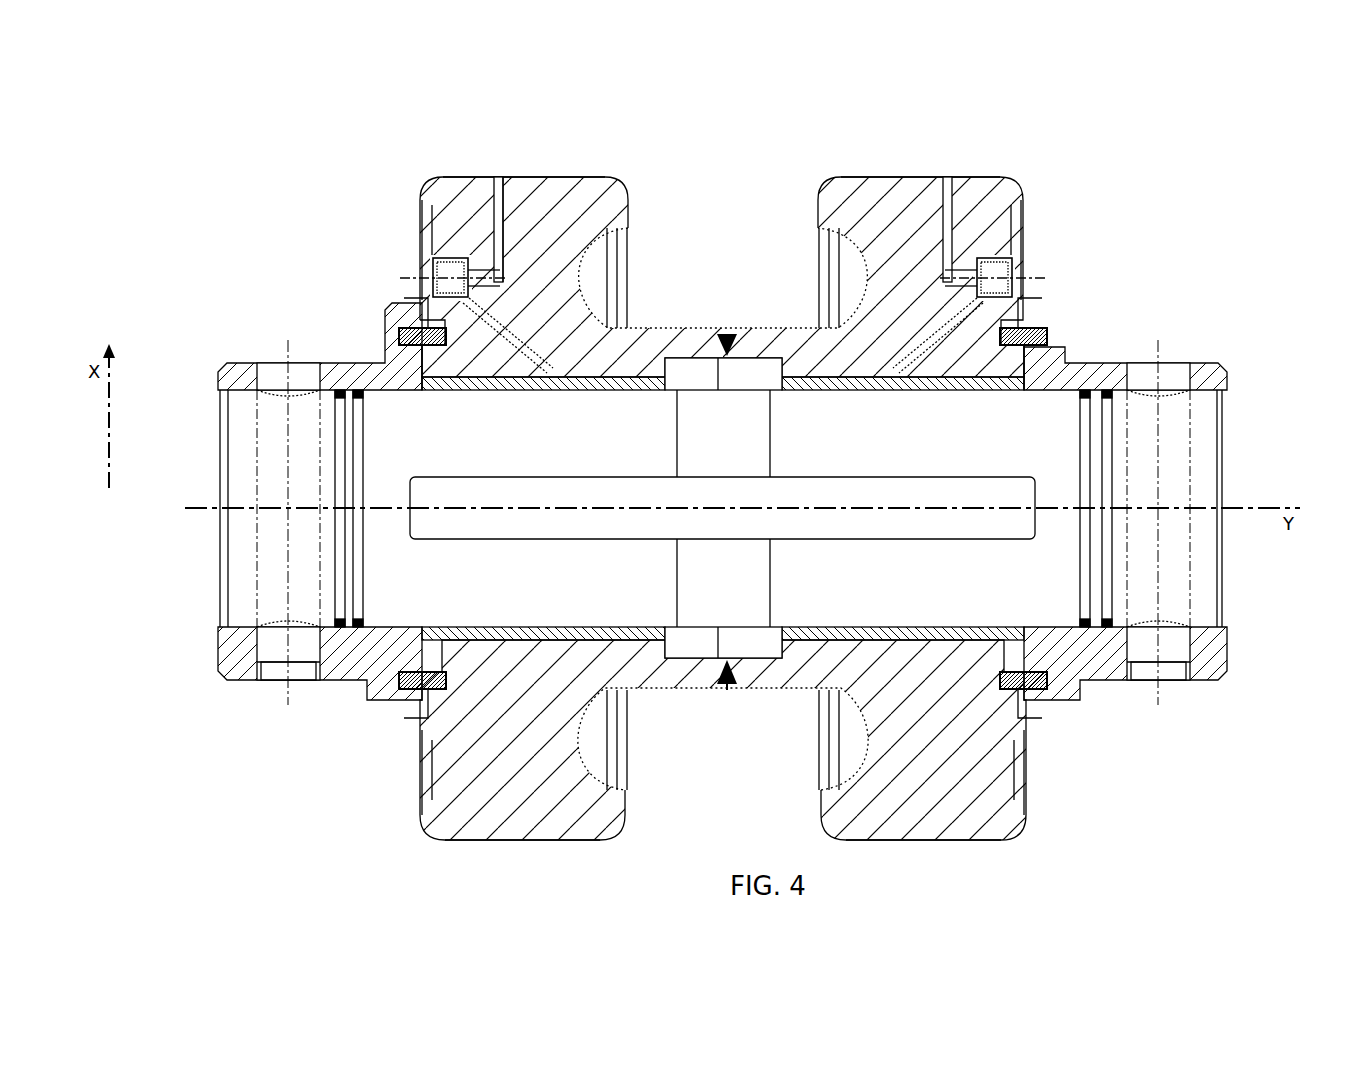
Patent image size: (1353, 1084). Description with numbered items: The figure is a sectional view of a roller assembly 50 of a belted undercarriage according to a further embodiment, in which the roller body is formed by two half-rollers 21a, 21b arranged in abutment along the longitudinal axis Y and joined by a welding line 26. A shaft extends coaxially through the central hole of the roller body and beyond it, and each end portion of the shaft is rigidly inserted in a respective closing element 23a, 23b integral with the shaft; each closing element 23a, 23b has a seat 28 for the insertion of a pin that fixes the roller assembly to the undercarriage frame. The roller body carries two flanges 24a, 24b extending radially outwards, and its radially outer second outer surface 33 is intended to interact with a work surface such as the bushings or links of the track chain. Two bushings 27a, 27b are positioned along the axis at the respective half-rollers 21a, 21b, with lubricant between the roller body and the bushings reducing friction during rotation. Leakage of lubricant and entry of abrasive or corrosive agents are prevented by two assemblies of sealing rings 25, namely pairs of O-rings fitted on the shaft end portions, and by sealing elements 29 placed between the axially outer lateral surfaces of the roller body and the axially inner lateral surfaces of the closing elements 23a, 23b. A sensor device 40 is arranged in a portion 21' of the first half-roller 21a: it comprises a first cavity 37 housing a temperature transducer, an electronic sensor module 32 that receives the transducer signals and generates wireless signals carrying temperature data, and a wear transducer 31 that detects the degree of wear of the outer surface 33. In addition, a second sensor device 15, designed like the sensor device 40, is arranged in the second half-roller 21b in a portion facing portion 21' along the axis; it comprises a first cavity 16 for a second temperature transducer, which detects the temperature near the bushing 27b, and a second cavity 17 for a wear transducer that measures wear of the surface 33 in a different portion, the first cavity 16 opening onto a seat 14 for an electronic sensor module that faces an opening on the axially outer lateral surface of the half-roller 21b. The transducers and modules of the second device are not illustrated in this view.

The seat 14 is at (998, 272).
The second sensor device 15 is at (938, 212).
The first cavity 16 is at (940, 340).
The second cavity 17 is at (950, 197).
The portion of the roller body 21' is at (482, 235).
The half-roller 21a is at (420, 807).
The second half-roller 21b is at (1026, 803).
The closing element 23a is at (224, 364).
The closing element 23b is at (1218, 364).
The flange 24a is at (612, 826).
The flange 24b is at (950, 822).
The sealing rings 25 is at (1088, 390).
The welding line 26 is at (727, 336).
The bushing 27a is at (617, 641).
The bushing 27b is at (830, 641).
The seat 28 is at (275, 363).
The sealing elements 29 is at (420, 335).
The wear transducer 31 is at (498, 195).
The electronic sensor module 32 is at (450, 263).
The second outer surface 33 is at (604, 178).
The first cavity 37 is at (525, 335).
The sensor device 40 is at (510, 225).
The roller assembly 50 is at (1160, 200).